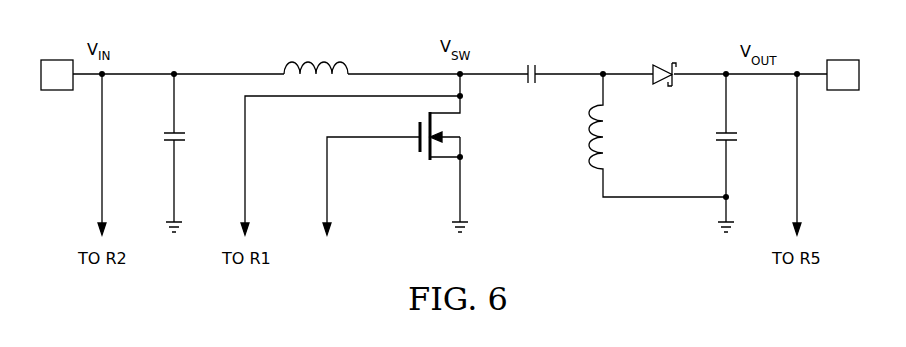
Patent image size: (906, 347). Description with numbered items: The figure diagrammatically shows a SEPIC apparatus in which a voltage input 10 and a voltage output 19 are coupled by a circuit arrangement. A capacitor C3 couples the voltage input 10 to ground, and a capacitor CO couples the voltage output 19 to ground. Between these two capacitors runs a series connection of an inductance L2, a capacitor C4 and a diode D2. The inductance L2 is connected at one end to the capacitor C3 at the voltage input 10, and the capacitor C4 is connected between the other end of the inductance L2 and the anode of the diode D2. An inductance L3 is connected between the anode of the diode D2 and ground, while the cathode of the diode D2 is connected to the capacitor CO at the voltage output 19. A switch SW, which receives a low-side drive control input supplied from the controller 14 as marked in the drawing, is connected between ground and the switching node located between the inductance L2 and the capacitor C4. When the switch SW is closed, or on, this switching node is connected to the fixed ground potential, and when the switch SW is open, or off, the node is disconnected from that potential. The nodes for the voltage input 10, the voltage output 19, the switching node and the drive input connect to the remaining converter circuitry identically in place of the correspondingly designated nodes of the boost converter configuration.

The voltage input 10 is at (55, 60).
The voltage output 19 is at (842, 60).
The controller (LDRV source) 14 is at (355, 213).
The capacitor C3 is at (159, 153).
The inductance L2 is at (316, 55).
The switch SW is at (457, 153).
The capacitor C4 is at (530, 60).
The inductance L3 is at (642, 135).
The diode D2 is at (664, 62).
The capacitor CO is at (710, 153).